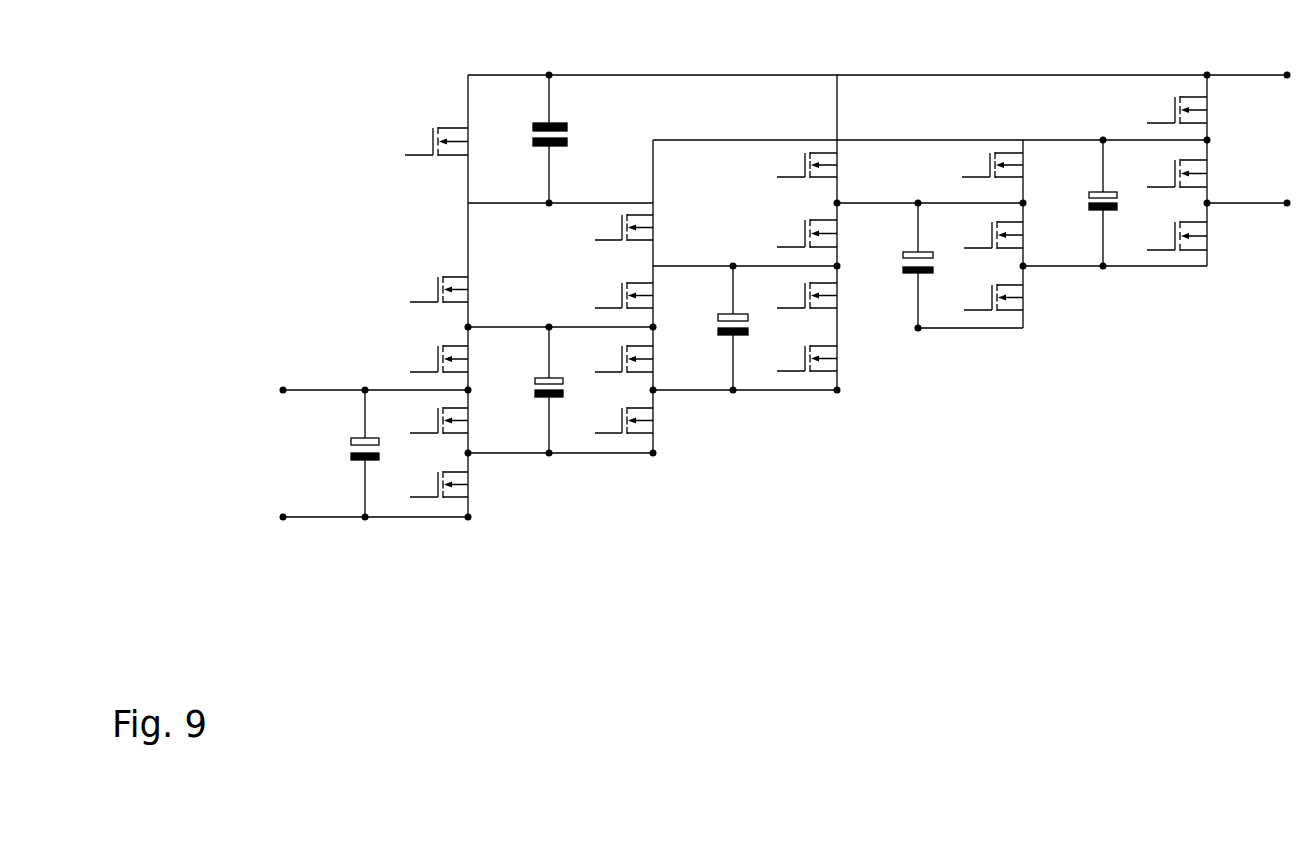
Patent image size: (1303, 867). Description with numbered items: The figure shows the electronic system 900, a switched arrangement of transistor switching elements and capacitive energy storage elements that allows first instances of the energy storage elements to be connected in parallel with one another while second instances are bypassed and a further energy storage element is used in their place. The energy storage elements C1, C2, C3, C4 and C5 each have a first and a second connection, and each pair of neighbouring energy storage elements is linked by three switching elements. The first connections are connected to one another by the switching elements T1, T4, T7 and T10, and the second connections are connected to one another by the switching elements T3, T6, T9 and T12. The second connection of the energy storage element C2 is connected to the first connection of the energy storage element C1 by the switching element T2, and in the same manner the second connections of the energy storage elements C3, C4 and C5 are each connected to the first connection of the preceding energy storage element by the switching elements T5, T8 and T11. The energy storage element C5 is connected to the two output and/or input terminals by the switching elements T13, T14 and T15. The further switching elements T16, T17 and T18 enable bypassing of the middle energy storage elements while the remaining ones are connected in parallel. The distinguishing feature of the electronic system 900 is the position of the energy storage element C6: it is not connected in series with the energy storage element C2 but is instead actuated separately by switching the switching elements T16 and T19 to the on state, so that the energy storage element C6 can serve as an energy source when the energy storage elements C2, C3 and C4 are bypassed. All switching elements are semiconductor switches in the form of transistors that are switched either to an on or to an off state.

The electronic system 900 is at (936, 451).
The switching element T1 is at (435, 352).
The switching element T2 is at (435, 413).
The switching element T3 is at (435, 476).
The switching element T4 is at (620, 289).
The switching element T5 is at (620, 354).
The switching element T6 is at (620, 416).
The switching element T7 is at (803, 228).
The switching element T8 is at (803, 290).
The switching element T9 is at (803, 353).
The switching element T10 is at (983, 160).
The switching element T11 is at (983, 228).
The switching element T12 is at (983, 291).
The switching element T13 is at (1168, 103).
The switching element T14 is at (1168, 166).
The switching element T15 is at (1168, 229).
The switching element T16 is at (427, 282).
The switching element T17 is at (798, 160).
The switching element T18 is at (613, 222).
The switching element T19 is at (427, 132).
The energy storage element C1 is at (354, 453).
The energy storage element C2 is at (539, 390).
The energy storage element C3 is at (723, 328).
The energy storage element C4 is at (907, 265).
The energy storage element C5 is at (1092, 203).
The energy storage element C6 is at (540, 139).